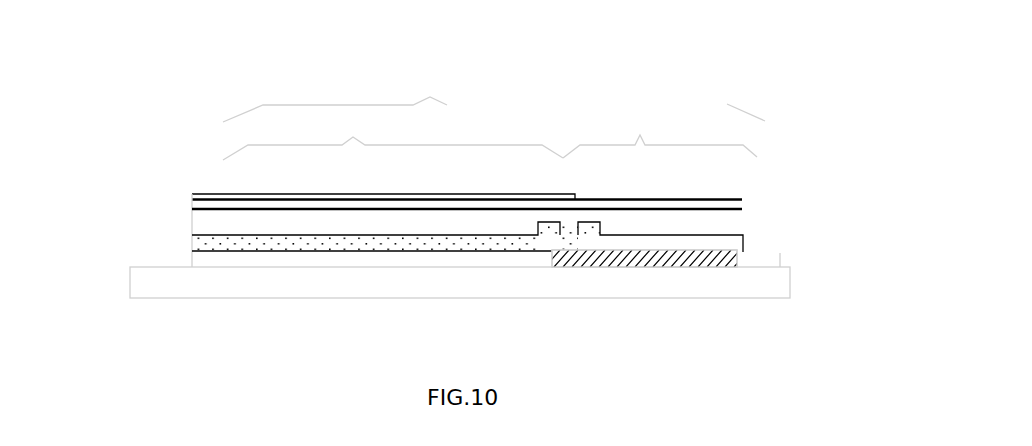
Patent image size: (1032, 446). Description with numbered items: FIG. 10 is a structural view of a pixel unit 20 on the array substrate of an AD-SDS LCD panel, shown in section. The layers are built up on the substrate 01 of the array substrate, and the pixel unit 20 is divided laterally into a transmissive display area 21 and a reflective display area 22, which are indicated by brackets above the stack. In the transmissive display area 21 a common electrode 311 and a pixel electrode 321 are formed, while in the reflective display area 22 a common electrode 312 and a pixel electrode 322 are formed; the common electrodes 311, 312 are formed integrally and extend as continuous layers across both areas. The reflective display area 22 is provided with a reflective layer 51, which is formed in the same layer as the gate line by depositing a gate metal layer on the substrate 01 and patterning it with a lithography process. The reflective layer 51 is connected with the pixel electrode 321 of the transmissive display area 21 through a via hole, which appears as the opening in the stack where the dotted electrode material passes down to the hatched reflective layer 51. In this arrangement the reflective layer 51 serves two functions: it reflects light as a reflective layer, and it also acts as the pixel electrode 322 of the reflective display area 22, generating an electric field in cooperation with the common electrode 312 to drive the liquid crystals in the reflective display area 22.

The substrate 01 is at (760, 287).
The pixel unit 20 is at (494, 99).
The transmissive display area 21 is at (393, 136).
The reflective display area 22 is at (660, 135).
The common electrode 311 is at (200, 201).
The common electrode 312 is at (715, 201).
The pixel electrode 321 is at (213, 242).
The pixel electrode 322 is at (668, 262).
The reflective layer 51 is at (644, 258).